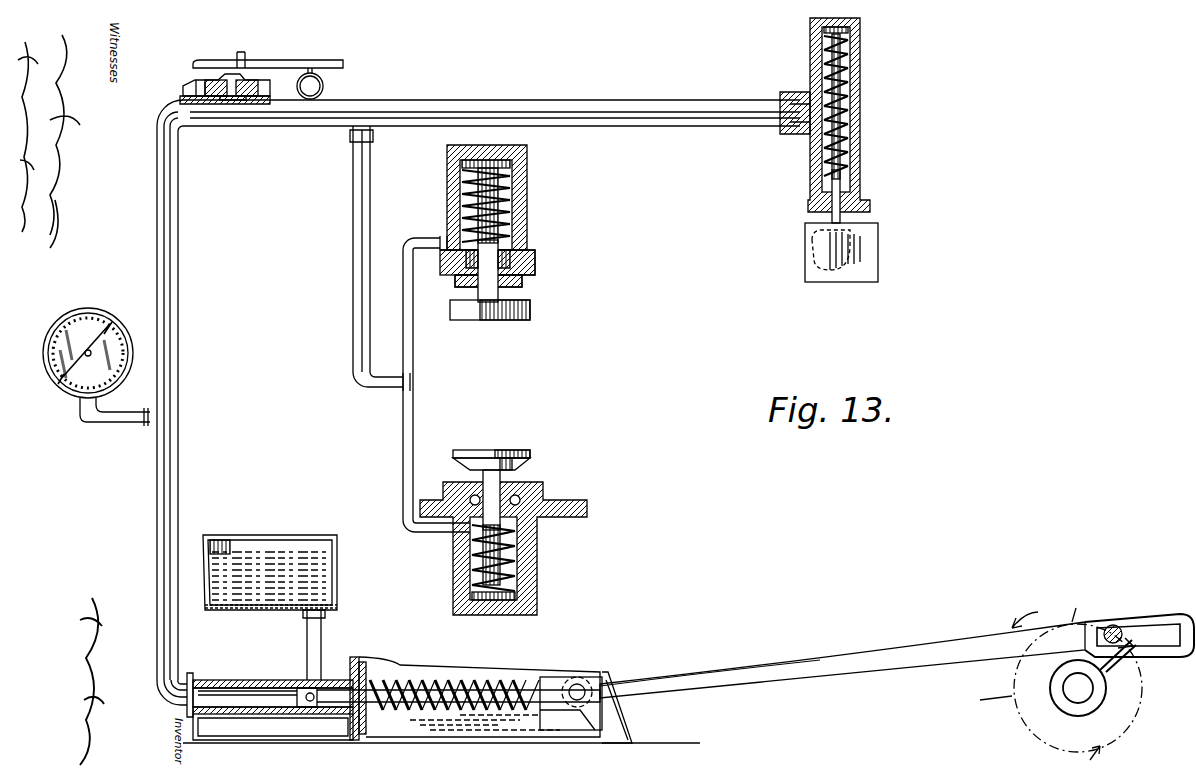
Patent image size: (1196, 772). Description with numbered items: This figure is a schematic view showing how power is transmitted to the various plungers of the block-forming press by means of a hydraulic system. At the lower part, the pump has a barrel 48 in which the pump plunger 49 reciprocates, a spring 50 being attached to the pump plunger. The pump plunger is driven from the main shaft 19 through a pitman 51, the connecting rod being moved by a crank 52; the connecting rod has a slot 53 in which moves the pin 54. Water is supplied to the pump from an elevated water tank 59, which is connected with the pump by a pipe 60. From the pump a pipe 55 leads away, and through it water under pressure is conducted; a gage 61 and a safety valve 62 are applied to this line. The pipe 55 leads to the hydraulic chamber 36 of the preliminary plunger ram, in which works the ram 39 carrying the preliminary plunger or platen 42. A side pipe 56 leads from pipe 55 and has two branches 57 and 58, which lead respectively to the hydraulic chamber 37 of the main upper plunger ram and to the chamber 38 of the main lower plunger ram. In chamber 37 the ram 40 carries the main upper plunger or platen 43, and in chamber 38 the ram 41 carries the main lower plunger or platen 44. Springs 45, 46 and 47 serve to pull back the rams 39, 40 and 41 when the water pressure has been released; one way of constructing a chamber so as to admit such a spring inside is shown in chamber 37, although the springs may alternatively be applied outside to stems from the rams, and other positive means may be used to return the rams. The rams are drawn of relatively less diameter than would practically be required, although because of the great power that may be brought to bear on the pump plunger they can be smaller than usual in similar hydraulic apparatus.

The main shaft 19 is at (1076, 704).
The hydraulic chamber of the preliminary plunger ram 36 is at (862, 136).
The hydraulic chamber of the main upper plunger ram 37 is at (528, 216).
The chamber of the main lower plunger ram 38 is at (535, 565).
The ram 39 is at (858, 100).
The ram 40 is at (500, 196).
The ram 41 is at (505, 542).
The plunger or platen 42 is at (878, 256).
The plunger or platen 43 is at (530, 306).
The plunger or platen 44 is at (500, 452).
The spring 45 is at (848, 60).
The spring 46 is at (506, 177).
The spring 47 is at (515, 592).
The barrel of the pump 48 is at (238, 676).
The pump plunger 49 is at (338, 688).
The spring 50 is at (420, 678).
The pitman 51 is at (758, 668).
The crank 52 is at (1118, 676).
The slot 53 is at (1140, 628).
The pin 54 is at (1114, 625).
The pipe 55 is at (160, 612).
The side pipe 56 is at (352, 272).
The branch 57 is at (412, 356).
The branch 58 is at (420, 418).
The elevated water tank 59 is at (248, 542).
The pipe 60 is at (304, 630).
The gage 61 is at (56, 360).
The safety valve 62 is at (222, 64).